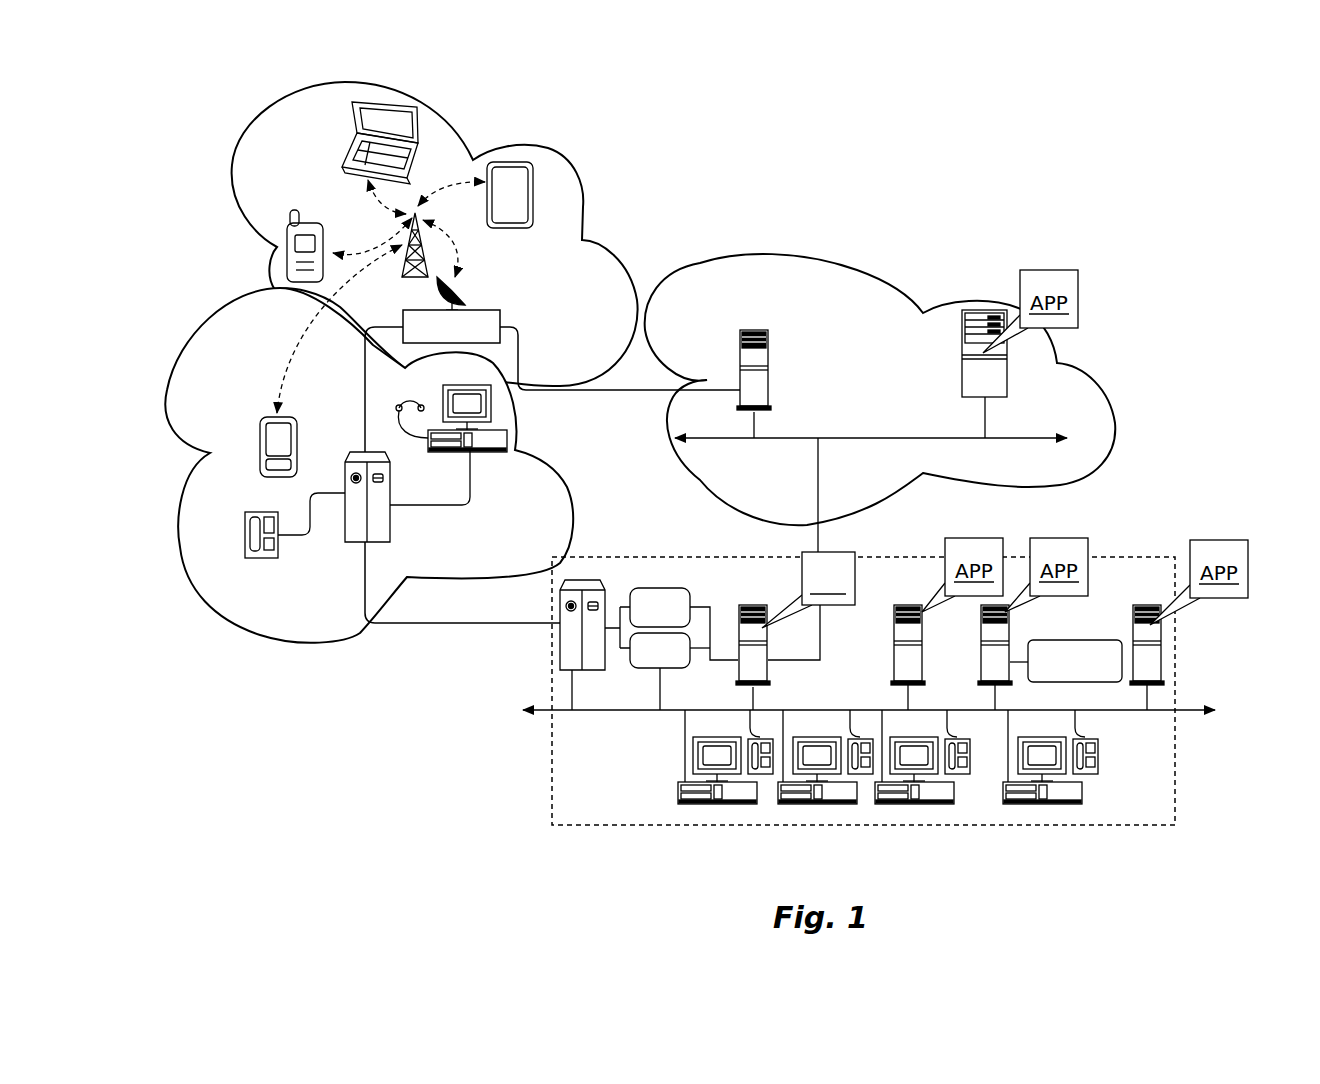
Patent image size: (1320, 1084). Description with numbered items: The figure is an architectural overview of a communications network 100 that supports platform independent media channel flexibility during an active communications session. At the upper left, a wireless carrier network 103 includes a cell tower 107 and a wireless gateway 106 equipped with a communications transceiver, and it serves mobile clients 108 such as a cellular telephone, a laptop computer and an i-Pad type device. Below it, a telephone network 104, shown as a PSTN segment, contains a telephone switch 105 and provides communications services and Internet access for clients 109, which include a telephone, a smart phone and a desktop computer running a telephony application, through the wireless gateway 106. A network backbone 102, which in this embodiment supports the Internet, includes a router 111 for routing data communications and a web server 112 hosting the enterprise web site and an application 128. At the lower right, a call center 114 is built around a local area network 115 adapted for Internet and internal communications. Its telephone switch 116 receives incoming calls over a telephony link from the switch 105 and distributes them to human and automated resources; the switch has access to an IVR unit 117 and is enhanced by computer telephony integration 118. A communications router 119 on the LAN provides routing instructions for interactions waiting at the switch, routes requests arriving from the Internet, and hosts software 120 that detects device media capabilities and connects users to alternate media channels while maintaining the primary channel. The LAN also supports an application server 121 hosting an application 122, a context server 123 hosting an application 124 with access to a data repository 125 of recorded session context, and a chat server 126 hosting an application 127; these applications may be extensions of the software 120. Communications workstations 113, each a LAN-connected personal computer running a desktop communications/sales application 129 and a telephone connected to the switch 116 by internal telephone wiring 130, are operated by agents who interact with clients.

The communications network 100 is at (962, 207).
The network backbone 102 is at (868, 437).
The wireless carrier network 103 is at (588, 210).
The telephone network 104 is at (533, 453).
The telephone switch 105 is at (392, 513).
The wireless gateway 106 is at (476, 308).
The cell tower 107 is at (413, 270).
The clients 108 is at (303, 165).
The clients 109 is at (232, 393).
The router 111 is at (772, 377).
The web server 112 is at (962, 360).
The communications workstations 113 is at (774, 759).
The call center 114 is at (1178, 788).
The local area network 115 is at (870, 708).
The telephone switch 116 is at (583, 580).
The IVR unit 117 is at (663, 588).
The computer telephony integration processor 118 is at (653, 668).
The communications router 119 is at (737, 668).
The software 120 is at (792, 597).
The application server 121 is at (893, 657).
The application 122 is at (977, 538).
The context server 123 is at (980, 642).
The application 124 is at (1063, 538).
The data repository 125 is at (1080, 682).
The chat server 126 is at (1148, 605).
The application 127 is at (1223, 540).
The application 128 is at (1048, 270).
The desktop communications/sales application 129 is at (693, 758).
The internal telephone wiring 130 is at (570, 692).